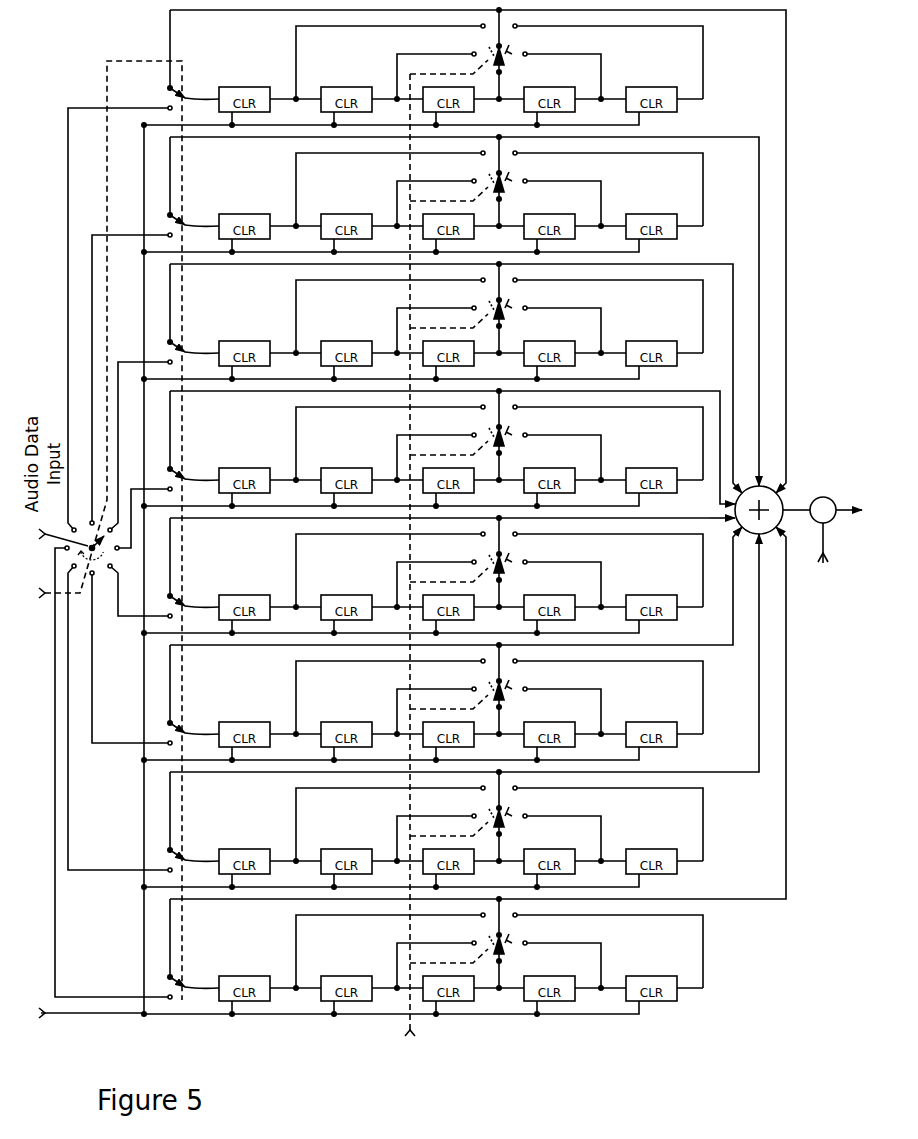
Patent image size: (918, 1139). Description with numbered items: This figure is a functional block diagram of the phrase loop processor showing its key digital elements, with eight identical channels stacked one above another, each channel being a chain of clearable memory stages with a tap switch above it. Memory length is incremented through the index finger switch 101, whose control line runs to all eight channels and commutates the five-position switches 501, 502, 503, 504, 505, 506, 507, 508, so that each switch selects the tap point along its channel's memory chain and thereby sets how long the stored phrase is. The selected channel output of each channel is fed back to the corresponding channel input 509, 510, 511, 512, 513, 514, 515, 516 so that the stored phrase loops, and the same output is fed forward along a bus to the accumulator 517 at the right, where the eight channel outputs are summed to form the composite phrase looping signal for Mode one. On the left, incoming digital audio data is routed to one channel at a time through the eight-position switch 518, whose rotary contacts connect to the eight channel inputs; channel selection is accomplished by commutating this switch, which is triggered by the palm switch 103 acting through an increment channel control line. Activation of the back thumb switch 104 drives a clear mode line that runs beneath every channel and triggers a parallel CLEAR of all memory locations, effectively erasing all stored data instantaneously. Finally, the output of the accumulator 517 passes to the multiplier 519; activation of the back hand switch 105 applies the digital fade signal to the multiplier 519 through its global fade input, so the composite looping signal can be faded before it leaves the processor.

The index finger switch 101 is at (403, 591).
The palm switch 103 is at (97, 530).
The back thumb switch 104 is at (81, 1004).
The back hand switch 105 is at (819, 616).
The 5-position switch 501 is at (517, 49).
The 5-position switch 502 is at (517, 176).
The 5-position switch 503 is at (517, 303).
The 5-position switch 504 is at (517, 430).
The 5-position switch 505 is at (517, 557).
The 5-position switch 506 is at (517, 684).
The 5-position switch 507 is at (517, 811).
The 5-position switch 508 is at (517, 938).
The channel input 509 is at (193, 86).
The channel input 510 is at (193, 214).
The channel input 511 is at (193, 341).
The channel input 512 is at (193, 474).
The channel input 513 is at (193, 594).
The channel input 514 is at (193, 721).
The channel input 515 is at (193, 855).
The channel input 516 is at (193, 976).
The accumulator 517 is at (778, 492).
The 8-position switch 518 is at (124, 569).
The multiplier 519 is at (826, 497).